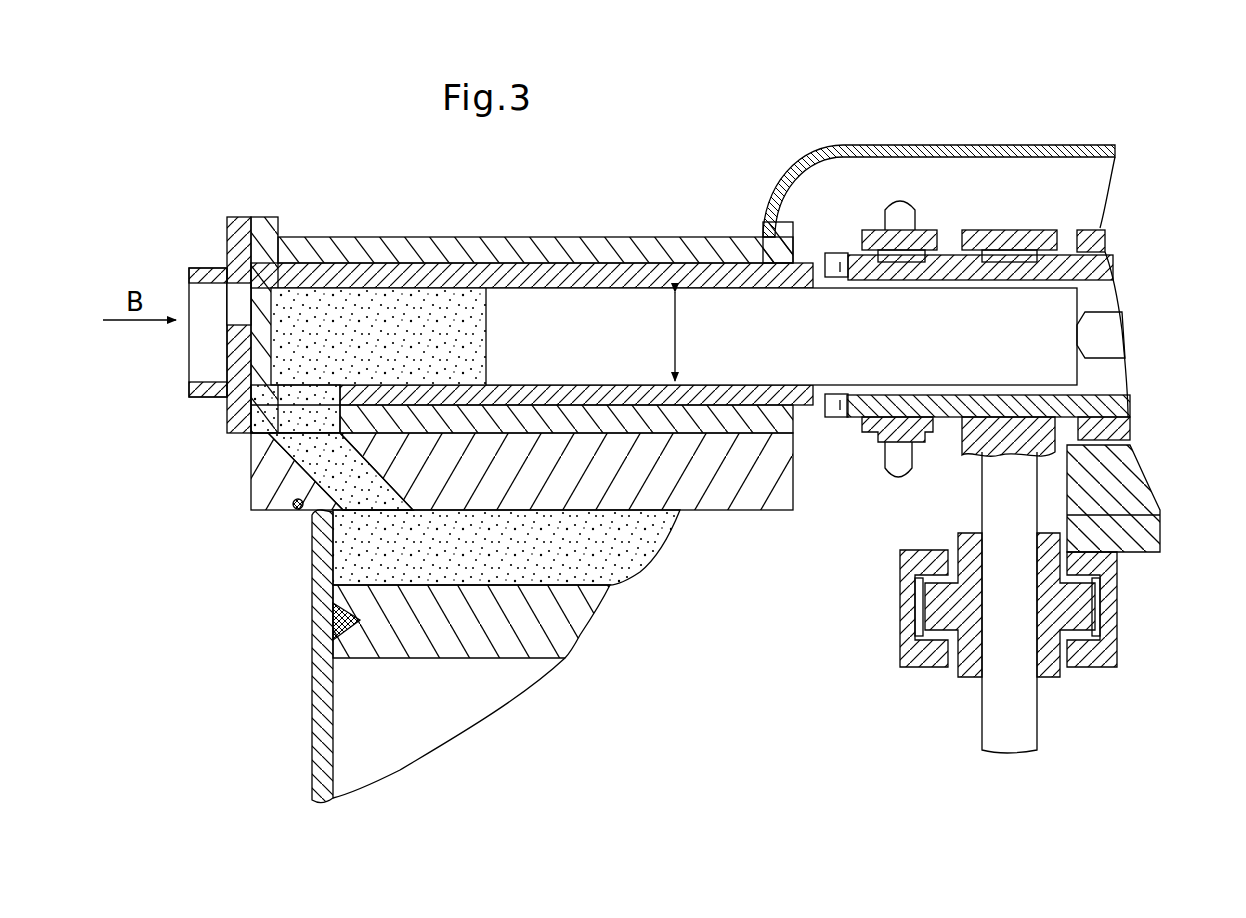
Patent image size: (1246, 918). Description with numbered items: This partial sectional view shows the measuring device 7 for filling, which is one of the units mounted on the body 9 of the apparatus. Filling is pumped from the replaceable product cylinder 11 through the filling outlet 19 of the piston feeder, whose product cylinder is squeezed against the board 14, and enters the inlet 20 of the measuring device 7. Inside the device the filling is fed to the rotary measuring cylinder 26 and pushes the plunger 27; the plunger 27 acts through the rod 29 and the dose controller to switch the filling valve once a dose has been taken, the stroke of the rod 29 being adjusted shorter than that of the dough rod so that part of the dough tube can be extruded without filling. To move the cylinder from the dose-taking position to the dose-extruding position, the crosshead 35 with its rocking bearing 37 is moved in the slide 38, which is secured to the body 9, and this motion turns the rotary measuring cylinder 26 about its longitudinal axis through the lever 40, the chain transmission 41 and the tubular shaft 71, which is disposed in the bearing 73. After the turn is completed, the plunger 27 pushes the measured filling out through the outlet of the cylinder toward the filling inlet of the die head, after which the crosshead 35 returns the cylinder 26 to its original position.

The measuring device 7 is at (303, 245).
The rotary measuring cylinder 26 is at (368, 272).
The plunger 27 is at (525, 300).
The chain transmission 41 is at (878, 237).
The bearing 73 is at (1093, 240).
The rod 29 is at (1115, 340).
The body 9 is at (1148, 522).
The slide 38 is at (1117, 585).
The crosshead 35 is at (937, 578).
The rocking bearing 37 is at (970, 653).
The lever 40 is at (997, 488).
The tubular shaft 71 is at (862, 412).
The inlet 20 is at (290, 413).
The filling outlet 19 is at (300, 445).
The board 14 is at (272, 487).
The product cylinder 11 is at (360, 700).